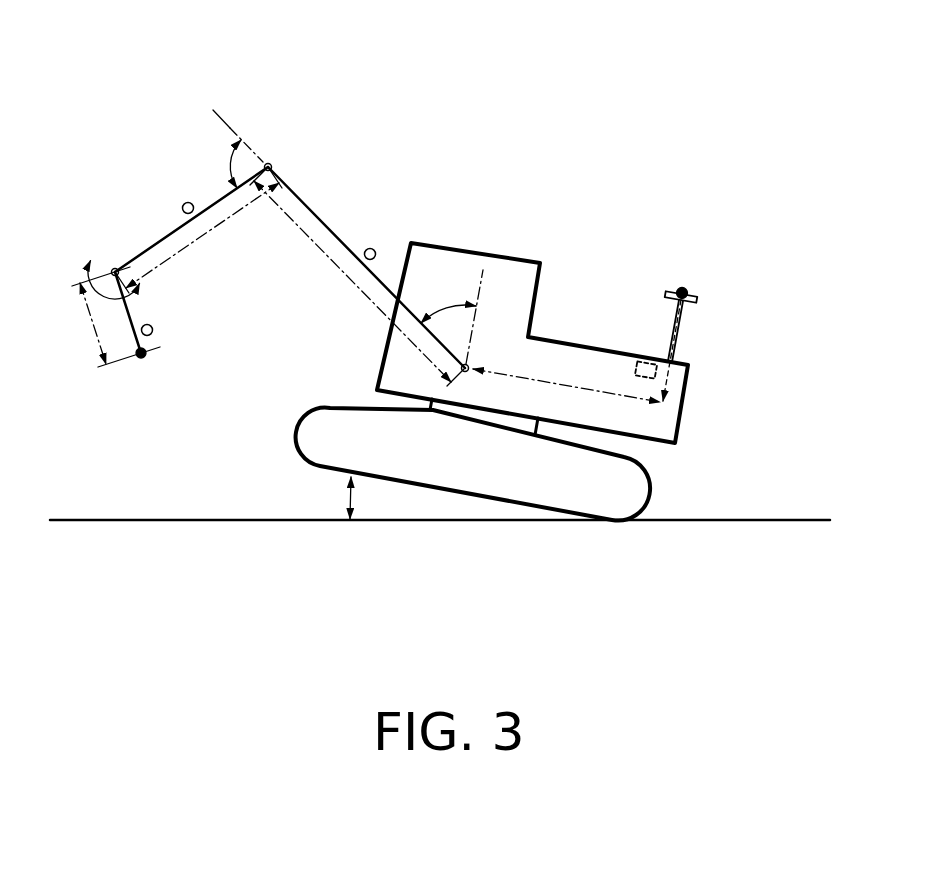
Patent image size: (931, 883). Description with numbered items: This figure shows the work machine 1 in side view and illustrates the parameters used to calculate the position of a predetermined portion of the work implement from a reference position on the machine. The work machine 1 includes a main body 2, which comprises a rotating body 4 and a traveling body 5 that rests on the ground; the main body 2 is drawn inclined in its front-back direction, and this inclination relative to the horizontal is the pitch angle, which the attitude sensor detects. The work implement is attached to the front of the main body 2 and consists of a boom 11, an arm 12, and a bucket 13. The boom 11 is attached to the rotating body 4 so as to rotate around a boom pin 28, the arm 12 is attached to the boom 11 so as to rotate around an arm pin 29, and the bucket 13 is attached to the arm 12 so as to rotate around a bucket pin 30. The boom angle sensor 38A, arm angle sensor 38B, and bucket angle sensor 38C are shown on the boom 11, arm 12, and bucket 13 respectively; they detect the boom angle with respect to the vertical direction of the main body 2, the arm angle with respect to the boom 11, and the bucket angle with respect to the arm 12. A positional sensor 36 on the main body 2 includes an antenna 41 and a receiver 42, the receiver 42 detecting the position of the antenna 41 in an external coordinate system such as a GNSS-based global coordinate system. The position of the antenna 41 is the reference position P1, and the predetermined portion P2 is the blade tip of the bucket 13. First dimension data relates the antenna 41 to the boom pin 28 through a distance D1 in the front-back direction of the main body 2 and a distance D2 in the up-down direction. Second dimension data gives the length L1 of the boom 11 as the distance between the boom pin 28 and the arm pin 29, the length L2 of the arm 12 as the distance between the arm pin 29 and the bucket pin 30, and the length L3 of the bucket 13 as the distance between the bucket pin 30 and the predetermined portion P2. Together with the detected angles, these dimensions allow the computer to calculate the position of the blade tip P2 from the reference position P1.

The work machine 1 is at (434, 104).
The main body 2 is at (578, 284).
The rotating body 4 is at (676, 418).
The travel body (crawler track) 5 is at (636, 482).
The boom 11 is at (334, 229).
The arm 12 is at (173, 230).
The bucket 13 is at (131, 317).
The boom pin 28 is at (469, 366).
The arm pin 29 is at (268, 162).
The bucket pin 30 is at (114, 268).
The positional sensor 36 is at (718, 328).
The boom angle sensor 38A is at (372, 248).
The arm angle sensor 38B is at (186, 202).
The bucket angle sensor 38C is at (153, 331).
The antenna 41 is at (666, 291).
The receiver 42 is at (646, 360).
The reference position P1 is at (685, 289).
The predetermined portion P2 is at (146, 356).
The distance between reference position and boom pin in front-back direction D1 is at (566, 390).
The distance between reference position and boom pin in up-down direction D2 is at (670, 347).
The length of the boom L1 is at (357, 276).
The length of the arm L2 is at (198, 230).
The length of the bucket L3 is at (100, 317).